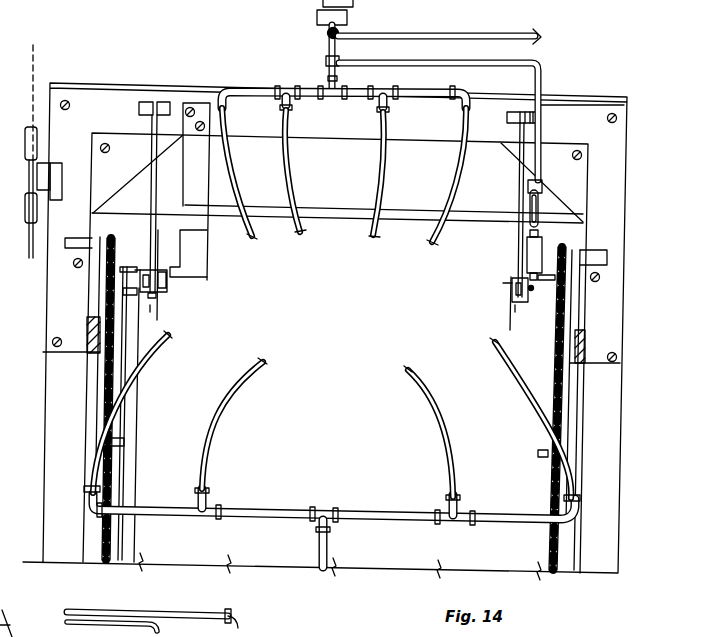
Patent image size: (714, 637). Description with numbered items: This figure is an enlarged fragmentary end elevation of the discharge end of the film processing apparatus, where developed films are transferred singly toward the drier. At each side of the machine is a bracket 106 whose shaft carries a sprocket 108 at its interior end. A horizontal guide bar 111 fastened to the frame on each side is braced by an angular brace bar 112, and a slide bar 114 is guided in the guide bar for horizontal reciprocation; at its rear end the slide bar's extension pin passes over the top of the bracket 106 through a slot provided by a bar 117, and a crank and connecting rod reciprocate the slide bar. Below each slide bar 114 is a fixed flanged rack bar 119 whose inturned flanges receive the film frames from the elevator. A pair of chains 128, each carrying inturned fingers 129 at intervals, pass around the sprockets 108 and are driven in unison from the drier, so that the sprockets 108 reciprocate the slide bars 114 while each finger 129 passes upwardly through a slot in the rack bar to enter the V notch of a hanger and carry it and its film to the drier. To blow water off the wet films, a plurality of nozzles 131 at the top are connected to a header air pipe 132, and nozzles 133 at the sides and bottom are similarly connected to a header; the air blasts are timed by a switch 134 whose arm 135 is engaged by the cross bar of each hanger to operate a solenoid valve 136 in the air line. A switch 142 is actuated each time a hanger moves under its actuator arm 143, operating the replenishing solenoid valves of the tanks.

The bracket 106 is at (100, 355).
The sprocket 108 is at (115, 247).
The horizontal guide bar 111 is at (332, 320).
The angular brace bar 112 is at (152, 173).
The slide bar 114 is at (165, 270).
The bar 117 is at (95, 240).
The fixed flanged rack bar 119 is at (107, 303).
The chain 128 is at (112, 432).
The finger 129 is at (128, 448).
The nozzle 131 is at (370, 235).
The header air pipe 132 is at (255, 90).
The nozzle 133 is at (405, 370).
The switch 134 is at (527, 255).
The arm 135 is at (512, 285).
The solenoid valve 136 is at (315, 17).
The switch 142 is at (208, 270).
The actuator arm 143 is at (167, 280).